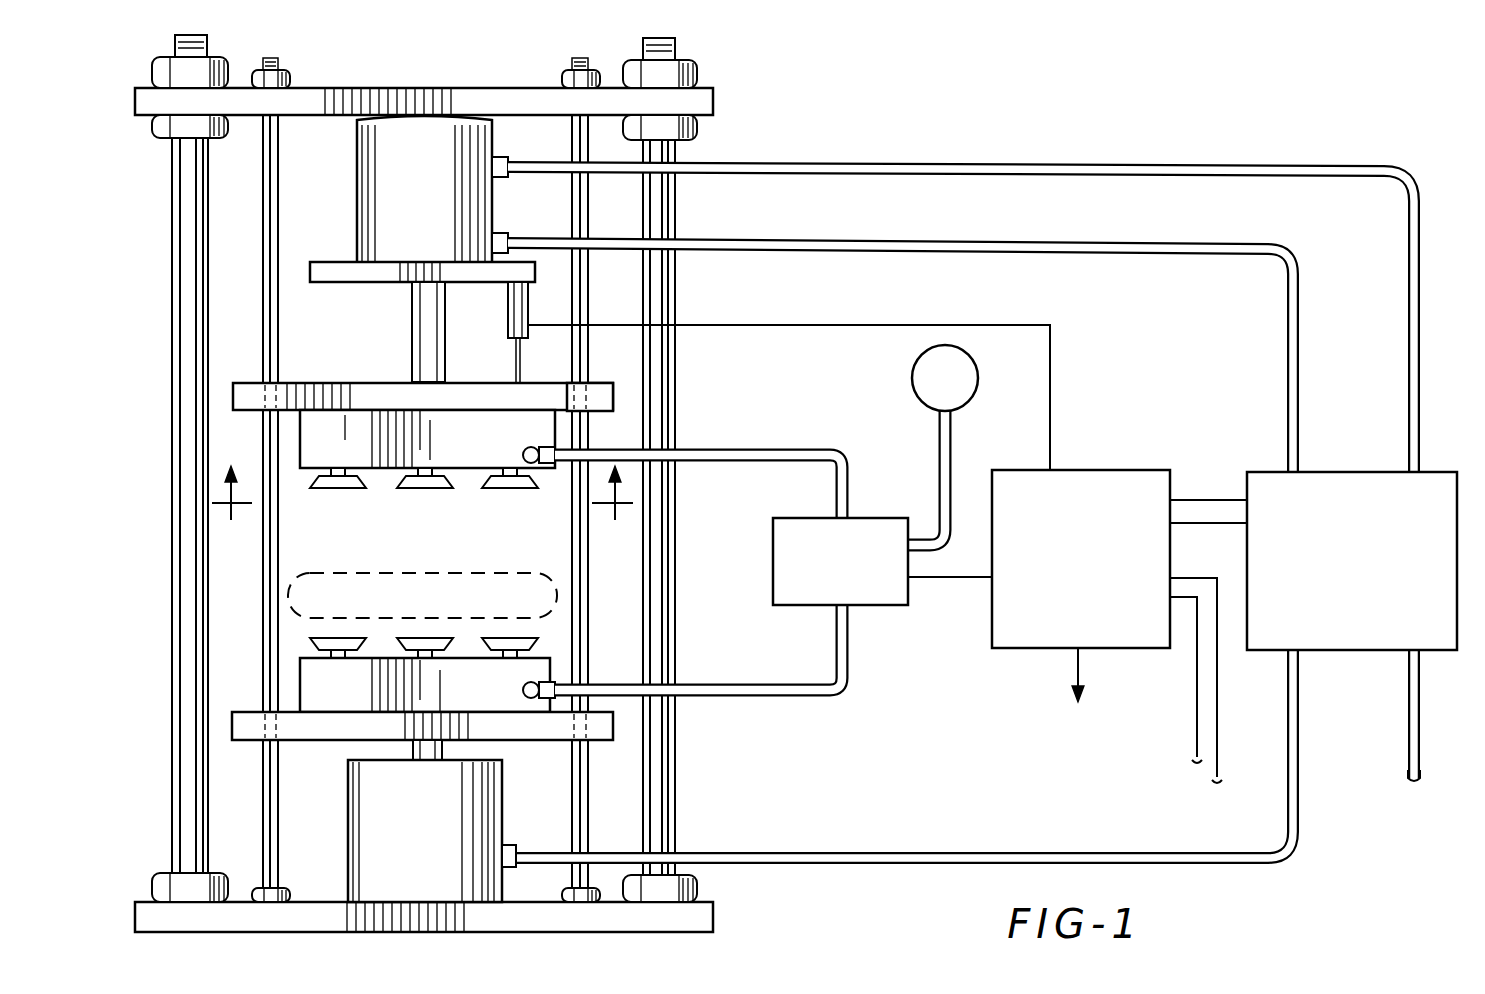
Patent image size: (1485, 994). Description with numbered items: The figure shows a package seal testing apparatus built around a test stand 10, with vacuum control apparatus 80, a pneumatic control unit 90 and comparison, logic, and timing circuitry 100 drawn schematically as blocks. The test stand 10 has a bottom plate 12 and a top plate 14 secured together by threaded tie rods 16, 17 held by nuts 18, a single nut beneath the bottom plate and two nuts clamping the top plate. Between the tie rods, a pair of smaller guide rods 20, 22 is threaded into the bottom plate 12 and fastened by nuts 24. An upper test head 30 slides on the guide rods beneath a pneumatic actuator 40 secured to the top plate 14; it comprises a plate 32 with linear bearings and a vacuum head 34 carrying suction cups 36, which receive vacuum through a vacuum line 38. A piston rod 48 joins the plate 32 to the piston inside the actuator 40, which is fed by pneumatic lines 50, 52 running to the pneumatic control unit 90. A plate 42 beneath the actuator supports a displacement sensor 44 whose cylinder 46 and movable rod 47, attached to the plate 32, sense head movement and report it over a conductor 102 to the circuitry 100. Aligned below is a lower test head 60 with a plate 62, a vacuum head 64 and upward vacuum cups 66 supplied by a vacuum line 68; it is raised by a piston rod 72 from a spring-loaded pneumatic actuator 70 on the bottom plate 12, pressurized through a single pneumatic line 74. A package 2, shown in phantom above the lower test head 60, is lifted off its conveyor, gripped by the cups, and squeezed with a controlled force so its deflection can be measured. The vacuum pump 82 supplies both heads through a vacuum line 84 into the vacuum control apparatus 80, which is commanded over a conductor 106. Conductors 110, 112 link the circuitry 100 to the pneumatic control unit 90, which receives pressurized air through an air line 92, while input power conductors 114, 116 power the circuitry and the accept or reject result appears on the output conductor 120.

The test stand 10 is at (728, 122).
The bottom plate 12 is at (716, 920).
The top plate 14 is at (350, 88).
The tie rod 16 is at (212, 232).
The tie rod 17 is at (678, 386).
The nuts 18 is at (228, 128).
The guide rod 20 is at (280, 232).
The guide rod 22 is at (590, 232).
The nuts 24 is at (296, 80).
The upper test head 30 is at (488, 382).
The plate 32 is at (388, 383).
The vacuum head 34 is at (470, 470).
The suction cups 36 is at (424, 490).
The vacuum line 38 is at (696, 456).
The pneumatic actuator 40 is at (358, 232).
The plate 42 is at (338, 262).
The displacement sensor 44 is at (534, 292).
The cylinder 46 is at (508, 332).
The movable rod 47 is at (522, 360).
The piston rod 48 is at (412, 332).
The pneumatic line 50 is at (780, 168).
The pneumatic line 52 is at (778, 240).
The lower test head 60 is at (510, 746).
The plate 62 is at (604, 742).
The vacuum head 64 is at (424, 640).
The vacuum cups 66 is at (508, 642).
The vacuum line 68 is at (702, 688).
The pneumatic actuator 70 is at (504, 816).
The piston rod 72 is at (444, 752).
The pneumatic line 74 is at (870, 852).
The vacuum control apparatus 80 is at (862, 518).
The vacuum pump 82 is at (912, 382).
The vacuum line 84 is at (936, 466).
The pneumatic control unit 90 is at (1430, 470).
The air line 92 is at (1418, 708).
The comparison, logic, and timing circuitry 100 is at (1118, 470).
The conductor 102 is at (768, 324).
The conductor 106 is at (940, 577).
The conductor 110 is at (1216, 500).
The conductor 112 is at (1192, 524).
The input power conductor 114 is at (1196, 700).
The input power conductor 116 is at (1218, 702).
The conductor 120 is at (1055, 675).
The package 2 is at (438, 557).